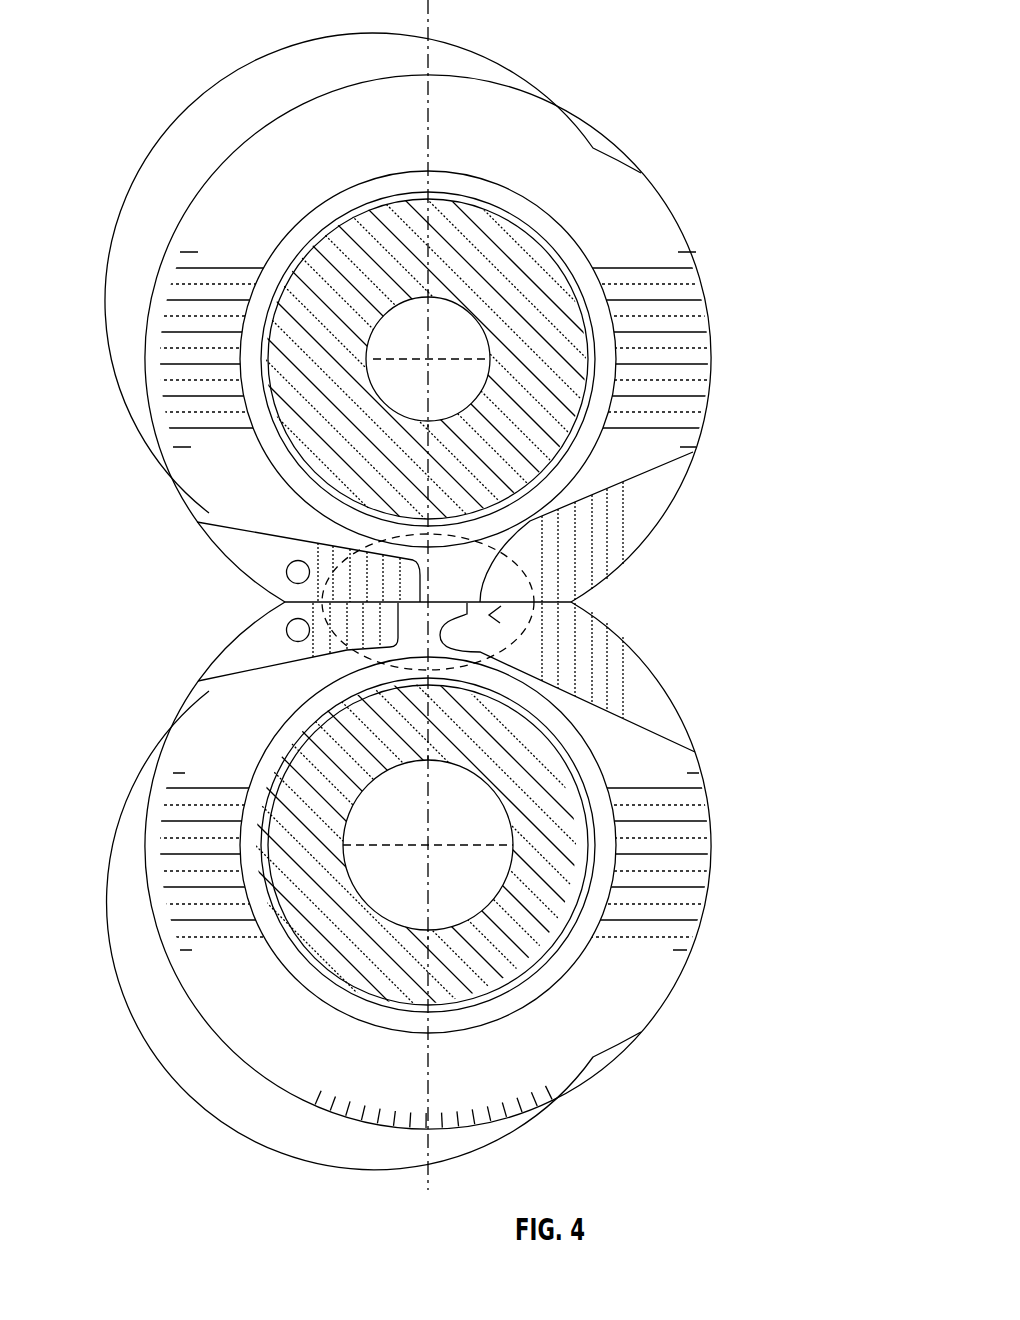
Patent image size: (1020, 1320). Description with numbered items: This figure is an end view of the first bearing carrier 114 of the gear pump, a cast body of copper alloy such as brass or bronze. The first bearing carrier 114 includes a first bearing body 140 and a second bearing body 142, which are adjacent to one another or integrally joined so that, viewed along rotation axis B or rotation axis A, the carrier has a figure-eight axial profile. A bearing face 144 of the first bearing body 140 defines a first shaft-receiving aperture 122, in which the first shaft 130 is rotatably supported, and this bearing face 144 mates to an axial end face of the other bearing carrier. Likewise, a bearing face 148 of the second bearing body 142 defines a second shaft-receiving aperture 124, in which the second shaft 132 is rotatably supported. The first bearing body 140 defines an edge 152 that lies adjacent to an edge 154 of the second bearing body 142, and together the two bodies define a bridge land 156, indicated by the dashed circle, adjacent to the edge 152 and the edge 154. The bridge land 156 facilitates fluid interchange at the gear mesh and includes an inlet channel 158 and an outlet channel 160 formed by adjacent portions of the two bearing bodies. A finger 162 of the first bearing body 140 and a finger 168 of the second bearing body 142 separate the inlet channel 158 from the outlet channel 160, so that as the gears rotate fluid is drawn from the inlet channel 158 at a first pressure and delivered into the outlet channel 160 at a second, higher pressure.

The first bearing carrier 114 is at (252, 1136).
The first shaft-receiving aperture 122 is at (270, 281).
The second shaft-receiving aperture 124 is at (255, 838).
The first shaft 130 is at (567, 275).
The second shaft 132 is at (548, 945).
The first bearing body 140 is at (104, 389).
The second bearing body 142 is at (138, 1012).
The bearing face 144 is at (662, 392).
The bearing face 148 is at (654, 832).
The edge 152 is at (337, 545).
The edge 154 is at (207, 673).
The bridge land 156 is at (530, 582).
The inlet channel 158 is at (293, 615).
The outlet channel 160 is at (493, 613).
The finger 162 is at (462, 574).
The finger 168 is at (407, 655).
The rotation axis B is at (428, 359).
The rotation axis A is at (428, 845).